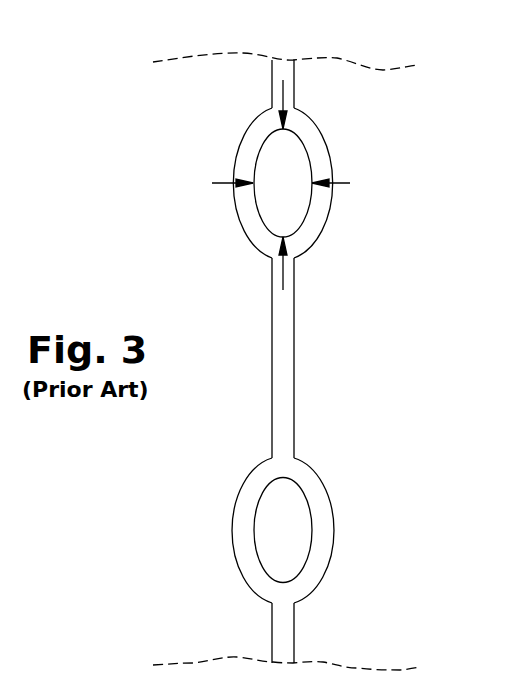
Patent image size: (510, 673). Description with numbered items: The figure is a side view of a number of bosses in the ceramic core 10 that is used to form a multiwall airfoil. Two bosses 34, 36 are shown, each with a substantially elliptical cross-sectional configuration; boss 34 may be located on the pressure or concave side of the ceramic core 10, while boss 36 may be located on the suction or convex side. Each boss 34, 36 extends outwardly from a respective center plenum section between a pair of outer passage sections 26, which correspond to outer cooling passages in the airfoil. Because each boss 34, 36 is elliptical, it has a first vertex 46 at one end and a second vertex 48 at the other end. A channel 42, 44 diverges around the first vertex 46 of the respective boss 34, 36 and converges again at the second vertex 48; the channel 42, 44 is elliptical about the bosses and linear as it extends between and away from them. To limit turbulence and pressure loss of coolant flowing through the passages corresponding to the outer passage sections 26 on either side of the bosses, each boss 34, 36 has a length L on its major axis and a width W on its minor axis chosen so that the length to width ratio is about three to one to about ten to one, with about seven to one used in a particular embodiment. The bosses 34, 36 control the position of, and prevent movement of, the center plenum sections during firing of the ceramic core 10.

The ceramic core 10 is at (311, 343).
The outer passage sections 26 is at (226, 350).
The boss 34 is at (341, 184).
The boss 36 is at (300, 200).
The channel 42 is at (325, 190).
The channel 44 is at (325, 190).
The first vertex 46 is at (282, 130).
The second vertex 48 is at (268, 255).
The length L is at (286, 88).
The width W is at (295, 185).